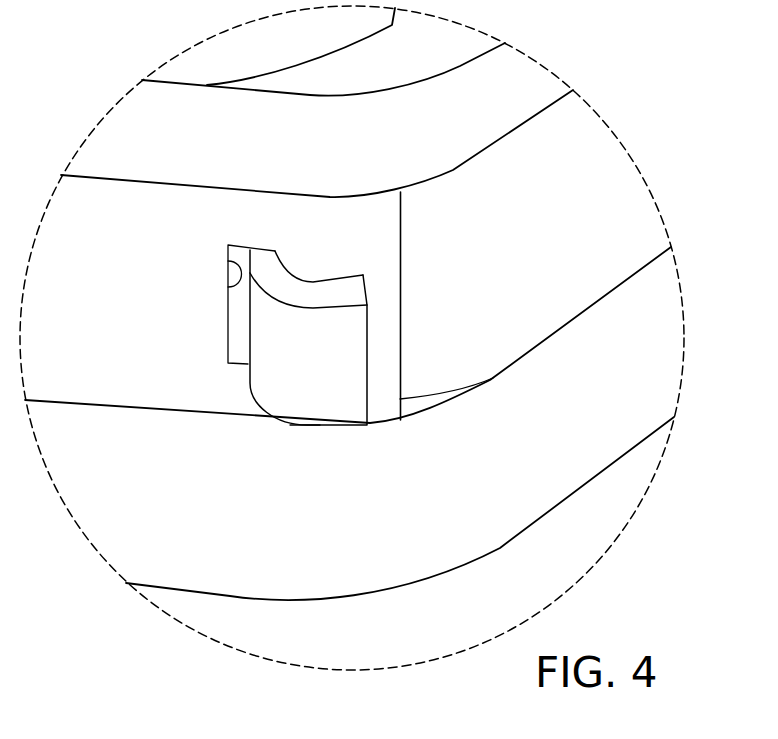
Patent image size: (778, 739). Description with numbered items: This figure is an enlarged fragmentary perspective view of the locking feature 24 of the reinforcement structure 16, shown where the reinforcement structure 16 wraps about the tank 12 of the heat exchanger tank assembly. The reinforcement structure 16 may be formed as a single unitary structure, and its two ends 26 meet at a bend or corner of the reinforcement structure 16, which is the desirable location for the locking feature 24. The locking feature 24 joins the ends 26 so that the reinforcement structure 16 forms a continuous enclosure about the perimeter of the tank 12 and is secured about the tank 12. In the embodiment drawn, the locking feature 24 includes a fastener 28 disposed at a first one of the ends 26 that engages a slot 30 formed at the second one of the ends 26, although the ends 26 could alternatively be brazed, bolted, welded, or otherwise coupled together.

The tank 12 is at (589, 425).
The reinforcement structure 16 is at (589, 231).
The locking feature 24 is at (304, 436).
The ends 26 is at (402, 317).
The fastener 28 is at (345, 400).
The slot 30 is at (233, 287).